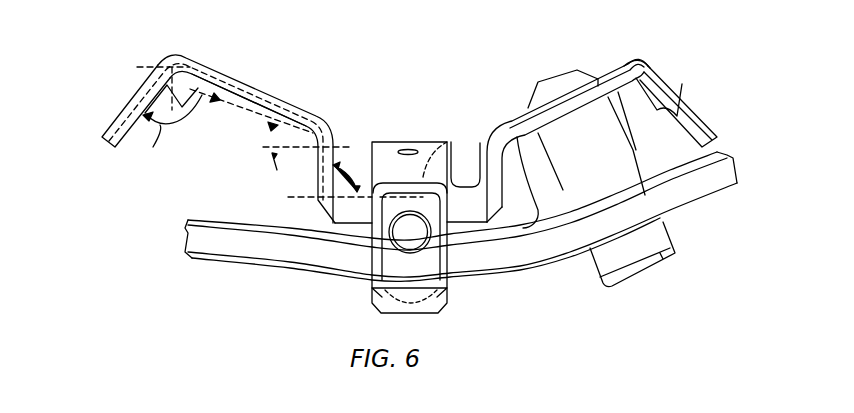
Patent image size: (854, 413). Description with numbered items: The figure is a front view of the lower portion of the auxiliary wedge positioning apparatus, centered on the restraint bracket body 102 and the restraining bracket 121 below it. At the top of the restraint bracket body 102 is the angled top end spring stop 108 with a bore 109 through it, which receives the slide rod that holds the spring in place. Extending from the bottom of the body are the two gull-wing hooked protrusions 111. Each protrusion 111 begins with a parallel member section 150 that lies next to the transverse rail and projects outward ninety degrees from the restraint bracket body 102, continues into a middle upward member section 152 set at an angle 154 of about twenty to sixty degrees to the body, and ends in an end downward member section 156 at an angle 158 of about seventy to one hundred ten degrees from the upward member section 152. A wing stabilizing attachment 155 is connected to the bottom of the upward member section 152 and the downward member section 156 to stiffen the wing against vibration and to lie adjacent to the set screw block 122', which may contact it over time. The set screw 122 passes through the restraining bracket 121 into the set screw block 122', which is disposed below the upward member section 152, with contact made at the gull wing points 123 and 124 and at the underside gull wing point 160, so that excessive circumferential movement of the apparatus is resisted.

The restraint bracket body 102 is at (467, 198).
The angled top end spring stop 108 is at (389, 189).
The bore 109 is at (405, 150).
The hooked protrusions 111 is at (153, 78).
The restraining bracket 121 is at (222, 242).
The set screw 122 is at (658, 257).
The set screw block 122' is at (665, 98).
The contact point 123 is at (645, 128).
The contact point 124 is at (252, 100).
The parallel member section 150 is at (482, 176).
The upward member section 152 is at (421, 117).
The angle 154 is at (262, 140).
The wing stabilizing attachment 155 is at (207, 72).
The end downward member section 156 is at (650, 62).
The angle 158 is at (160, 125).
The underside gull wing point 160 is at (193, 88).